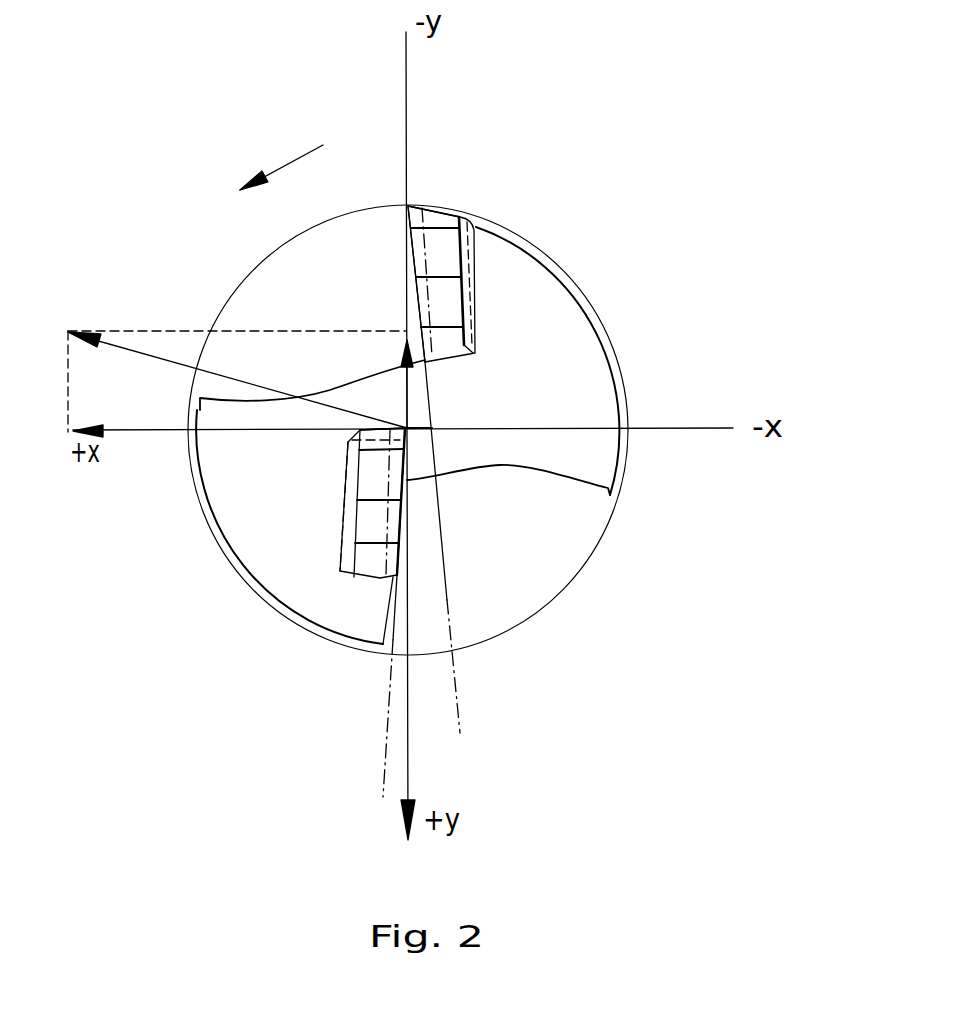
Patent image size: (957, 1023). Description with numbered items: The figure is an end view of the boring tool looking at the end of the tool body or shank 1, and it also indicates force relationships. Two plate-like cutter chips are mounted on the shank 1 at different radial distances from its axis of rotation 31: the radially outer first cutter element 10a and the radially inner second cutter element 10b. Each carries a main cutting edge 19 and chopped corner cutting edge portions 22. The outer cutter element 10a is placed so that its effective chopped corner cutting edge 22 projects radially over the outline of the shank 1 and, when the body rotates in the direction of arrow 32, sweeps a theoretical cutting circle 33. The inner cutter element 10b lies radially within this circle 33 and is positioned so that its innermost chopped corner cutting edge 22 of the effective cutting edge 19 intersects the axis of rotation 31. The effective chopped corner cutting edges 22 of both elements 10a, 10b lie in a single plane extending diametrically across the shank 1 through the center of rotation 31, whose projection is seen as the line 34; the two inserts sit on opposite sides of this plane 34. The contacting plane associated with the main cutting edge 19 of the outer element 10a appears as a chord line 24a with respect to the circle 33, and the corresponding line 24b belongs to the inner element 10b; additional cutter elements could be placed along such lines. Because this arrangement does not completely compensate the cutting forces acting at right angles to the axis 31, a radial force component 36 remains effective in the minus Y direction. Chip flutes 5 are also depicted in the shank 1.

The tool body or shank 1 is at (590, 450).
The chip flute 5 is at (268, 288).
The radially outer first cutter element 10a is at (477, 257).
The inner second cutter element 10b is at (333, 533).
The main cutting edge 19 is at (412, 292).
The corner cutting edge portion 22 is at (408, 212).
The chord line 24a is at (457, 685).
The chord line 24b is at (386, 730).
The axis of rotation 31 is at (408, 424).
The arrow indicating direction of rotation 32 is at (288, 153).
The theoretical cutting circle 33 is at (603, 322).
The theoretical diametrical plane 34 is at (405, 117).
The radial force component 36 is at (403, 352).